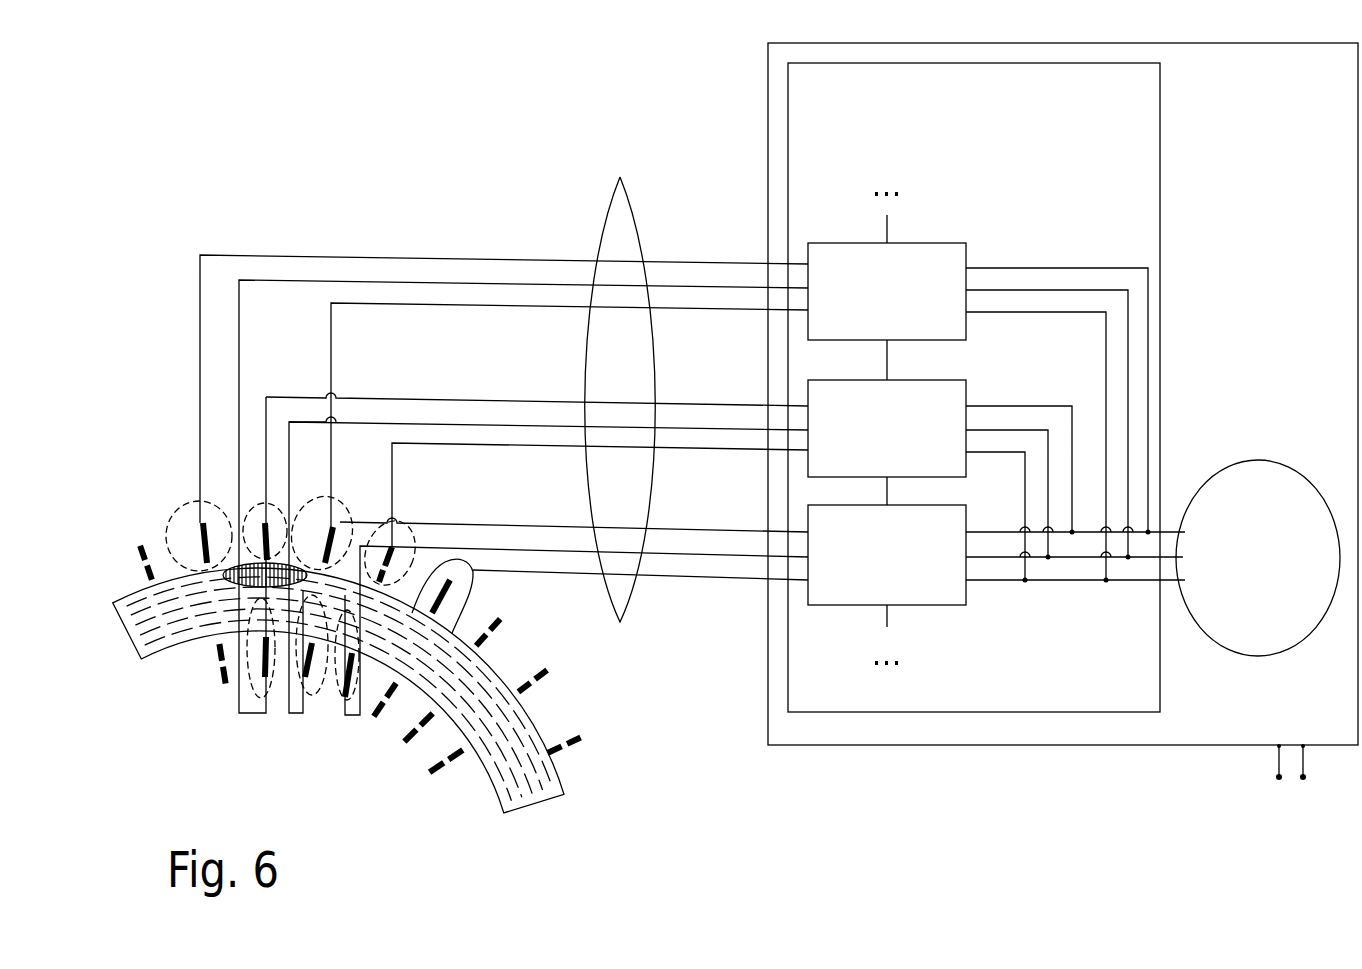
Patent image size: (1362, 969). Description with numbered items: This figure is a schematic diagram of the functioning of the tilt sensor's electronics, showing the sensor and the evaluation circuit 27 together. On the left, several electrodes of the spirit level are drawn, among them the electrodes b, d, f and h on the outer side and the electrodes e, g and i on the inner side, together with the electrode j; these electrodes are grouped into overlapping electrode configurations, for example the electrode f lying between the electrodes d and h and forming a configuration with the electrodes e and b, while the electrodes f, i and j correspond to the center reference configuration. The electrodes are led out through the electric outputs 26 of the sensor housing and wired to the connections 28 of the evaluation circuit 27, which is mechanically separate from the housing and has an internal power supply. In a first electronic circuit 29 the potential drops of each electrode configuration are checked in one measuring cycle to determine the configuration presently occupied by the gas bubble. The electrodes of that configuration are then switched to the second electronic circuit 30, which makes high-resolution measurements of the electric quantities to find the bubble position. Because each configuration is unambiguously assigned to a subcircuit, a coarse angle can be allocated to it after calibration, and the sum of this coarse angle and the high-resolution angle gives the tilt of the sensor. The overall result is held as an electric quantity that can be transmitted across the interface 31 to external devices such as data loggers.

The electric outputs 26 is at (622, 206).
The evaluation circuit 27 is at (1233, 713).
The connections 28 is at (802, 560).
The first electronic circuit 29 is at (838, 608).
The second electronic circuit 30 is at (1272, 564).
The interface 31 is at (1292, 780).
The electrode b is at (205, 528).
The electrode d is at (267, 525).
The electrode f is at (332, 530).
The electrode h is at (392, 548).
The electrode j is at (458, 596).
The electrode e is at (265, 680).
The electrode g is at (310, 680).
The electrode i is at (350, 698).